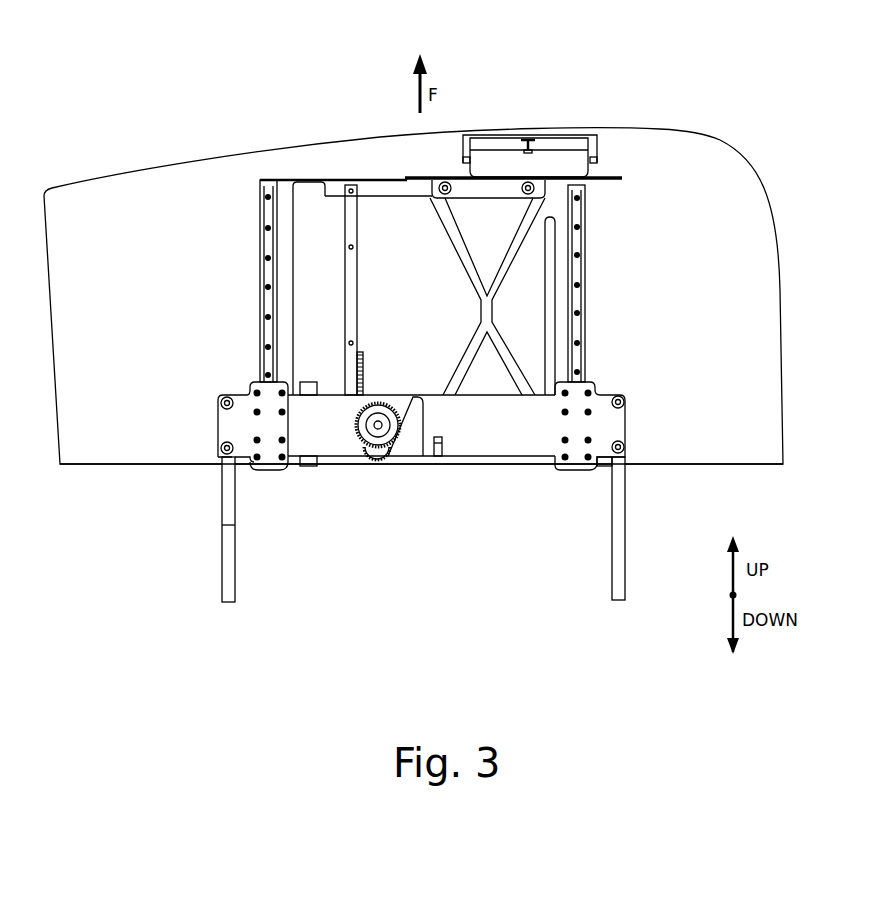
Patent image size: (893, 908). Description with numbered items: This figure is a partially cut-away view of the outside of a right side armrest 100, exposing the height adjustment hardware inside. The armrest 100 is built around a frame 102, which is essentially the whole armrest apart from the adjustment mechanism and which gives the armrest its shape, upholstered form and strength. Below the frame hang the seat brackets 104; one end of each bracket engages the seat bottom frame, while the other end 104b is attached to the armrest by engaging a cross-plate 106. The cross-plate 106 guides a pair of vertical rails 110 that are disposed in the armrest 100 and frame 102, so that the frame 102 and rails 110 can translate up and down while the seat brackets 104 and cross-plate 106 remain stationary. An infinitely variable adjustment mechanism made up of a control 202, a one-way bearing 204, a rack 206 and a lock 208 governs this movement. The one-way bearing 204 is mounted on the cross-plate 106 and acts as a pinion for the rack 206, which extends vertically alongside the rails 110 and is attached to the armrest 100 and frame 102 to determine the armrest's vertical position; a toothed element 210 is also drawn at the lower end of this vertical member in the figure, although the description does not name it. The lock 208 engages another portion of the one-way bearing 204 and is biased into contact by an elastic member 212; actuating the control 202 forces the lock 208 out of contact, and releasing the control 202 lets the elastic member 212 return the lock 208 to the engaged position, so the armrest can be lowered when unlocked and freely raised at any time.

The armrest 100 is at (163, 79).
The frame 102 is at (178, 184).
The seat bracket 104 is at (230, 546).
The other end of the seat bracket 104b is at (213, 470).
The cross-plate 106 is at (484, 440).
The rail 110 is at (268, 303).
The control 202 is at (562, 152).
The one-way bearing 204 is at (392, 405).
The rack 206 is at (358, 286).
The lock 208 is at (413, 440).
The rack 210 is at (360, 358).
The elastic member 212 is at (366, 456).